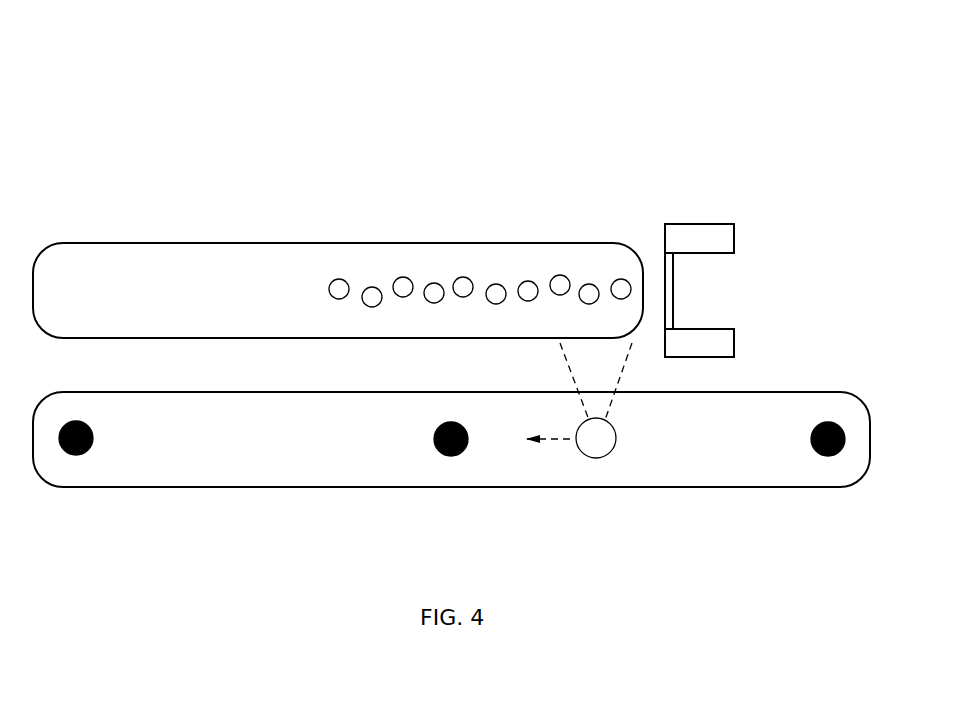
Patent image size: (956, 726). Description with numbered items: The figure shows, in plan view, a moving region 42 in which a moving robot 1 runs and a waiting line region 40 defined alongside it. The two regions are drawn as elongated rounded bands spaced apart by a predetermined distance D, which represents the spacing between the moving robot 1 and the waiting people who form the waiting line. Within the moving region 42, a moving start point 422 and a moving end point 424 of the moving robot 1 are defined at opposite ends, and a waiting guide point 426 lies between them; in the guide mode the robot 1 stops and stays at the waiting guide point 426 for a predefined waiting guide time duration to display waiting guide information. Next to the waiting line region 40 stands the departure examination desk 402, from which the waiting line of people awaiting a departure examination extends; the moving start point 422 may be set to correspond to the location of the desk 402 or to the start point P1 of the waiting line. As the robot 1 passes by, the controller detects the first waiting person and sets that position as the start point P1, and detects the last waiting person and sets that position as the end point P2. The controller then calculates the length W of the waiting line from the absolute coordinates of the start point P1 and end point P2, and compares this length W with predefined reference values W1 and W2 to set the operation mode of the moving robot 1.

The moving robot 1 is at (596, 458).
The waiting line region 40 is at (57, 243).
The moving region 42 is at (57, 392).
The departure examination desk 402 is at (736, 228).
The moving start point 422 is at (828, 457).
The moving end point 424 is at (76, 456).
The waiting guide point 426 is at (451, 457).
The start point of the waiting line P1 is at (629, 281).
The end point of the waiting line P2 is at (333, 281).
The length of the waiting line W is at (621, 278).
The reference value W1 is at (622, 153).
The reference value W2 is at (622, 57).
The predetermined distance D is at (264, 338).